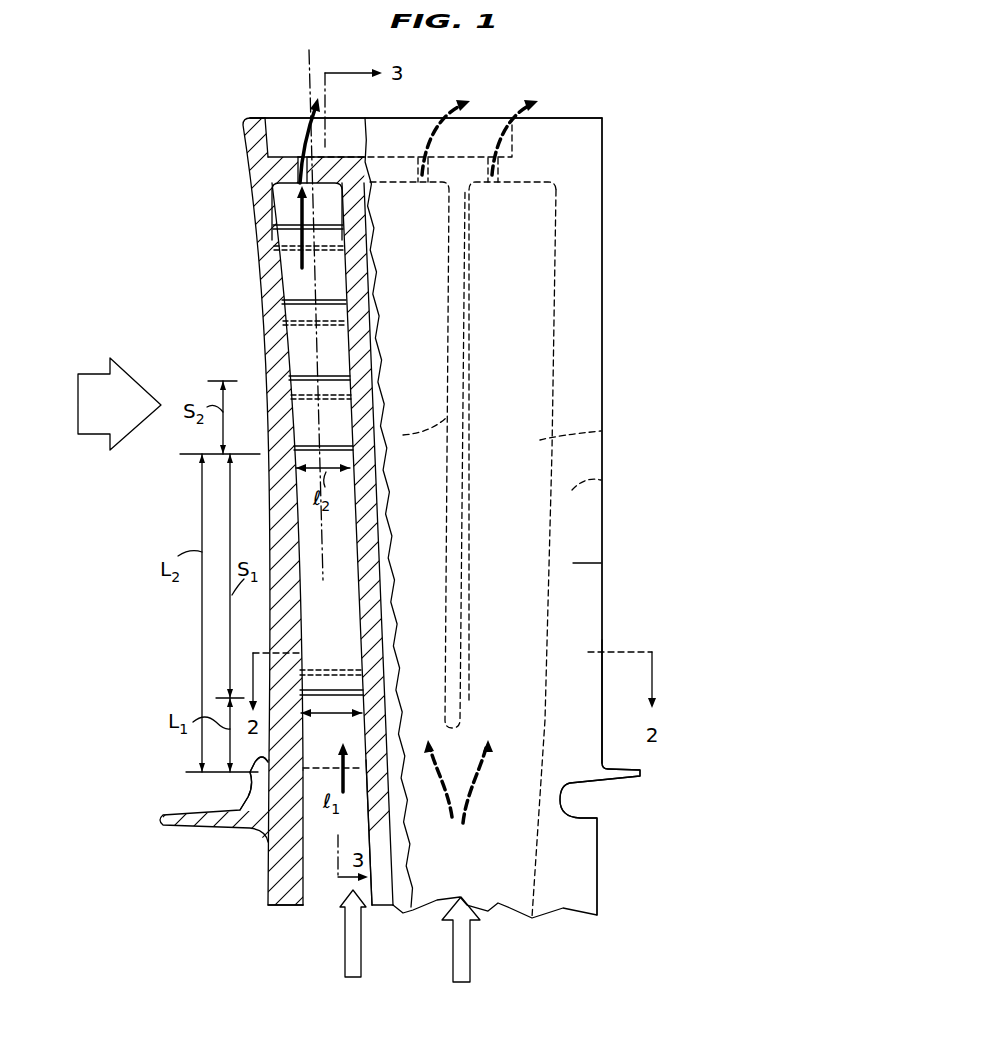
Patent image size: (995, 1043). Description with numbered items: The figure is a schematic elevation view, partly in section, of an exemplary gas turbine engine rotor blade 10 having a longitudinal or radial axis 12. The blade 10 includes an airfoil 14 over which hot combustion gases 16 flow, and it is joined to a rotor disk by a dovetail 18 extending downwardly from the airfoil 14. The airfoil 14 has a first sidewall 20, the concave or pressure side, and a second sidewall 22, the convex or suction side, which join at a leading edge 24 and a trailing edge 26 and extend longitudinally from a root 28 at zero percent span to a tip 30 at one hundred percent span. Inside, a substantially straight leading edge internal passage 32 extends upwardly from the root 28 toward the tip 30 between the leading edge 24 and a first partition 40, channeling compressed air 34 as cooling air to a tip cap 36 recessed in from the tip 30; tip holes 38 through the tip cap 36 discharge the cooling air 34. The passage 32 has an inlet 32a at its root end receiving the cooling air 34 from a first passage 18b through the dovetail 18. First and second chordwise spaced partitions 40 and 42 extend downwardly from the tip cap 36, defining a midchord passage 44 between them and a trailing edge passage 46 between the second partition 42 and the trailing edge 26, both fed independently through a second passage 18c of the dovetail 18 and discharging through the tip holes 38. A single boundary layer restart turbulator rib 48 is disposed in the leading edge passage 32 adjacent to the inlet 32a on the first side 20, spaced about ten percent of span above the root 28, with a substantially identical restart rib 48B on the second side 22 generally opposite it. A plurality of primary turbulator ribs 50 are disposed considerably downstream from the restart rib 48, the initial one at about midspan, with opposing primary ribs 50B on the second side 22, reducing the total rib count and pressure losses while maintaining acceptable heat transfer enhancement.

The gas turbine engine rotor blade 10 is at (607, 256).
The longitudinal or radial axis 12 is at (311, 62).
The airfoil 14 is at (601, 614).
The hot combustion gases 16 is at (92, 372).
The dovetail 18 is at (268, 866).
The first passage 18b is at (325, 845).
The second passage 18c is at (510, 878).
The first sidewall 20 is at (601, 480).
The second sidewall 22 is at (601, 563).
The leading edge 24 is at (262, 228).
The trailing edge 26 is at (601, 345).
The root 28 is at (250, 770).
The tip 30 is at (577, 118).
The internal passage 32 is at (300, 340).
The inlet 32a is at (362, 790).
The compressed air 34 is at (448, 955).
The tip cap 36 is at (283, 158).
The tip holes 38 is at (297, 168).
The first partition 40 is at (360, 352).
The second partition 42 is at (458, 305).
The midchord passage 44 is at (447, 415).
The trailing edge passage 46 is at (601, 431).
The boundary layer restart turbulator rib 48 is at (363, 694).
The restart rib 48B is at (347, 667).
The primary turbulator ribs 50 is at (335, 445).
The primary ribs 50B is at (316, 360).